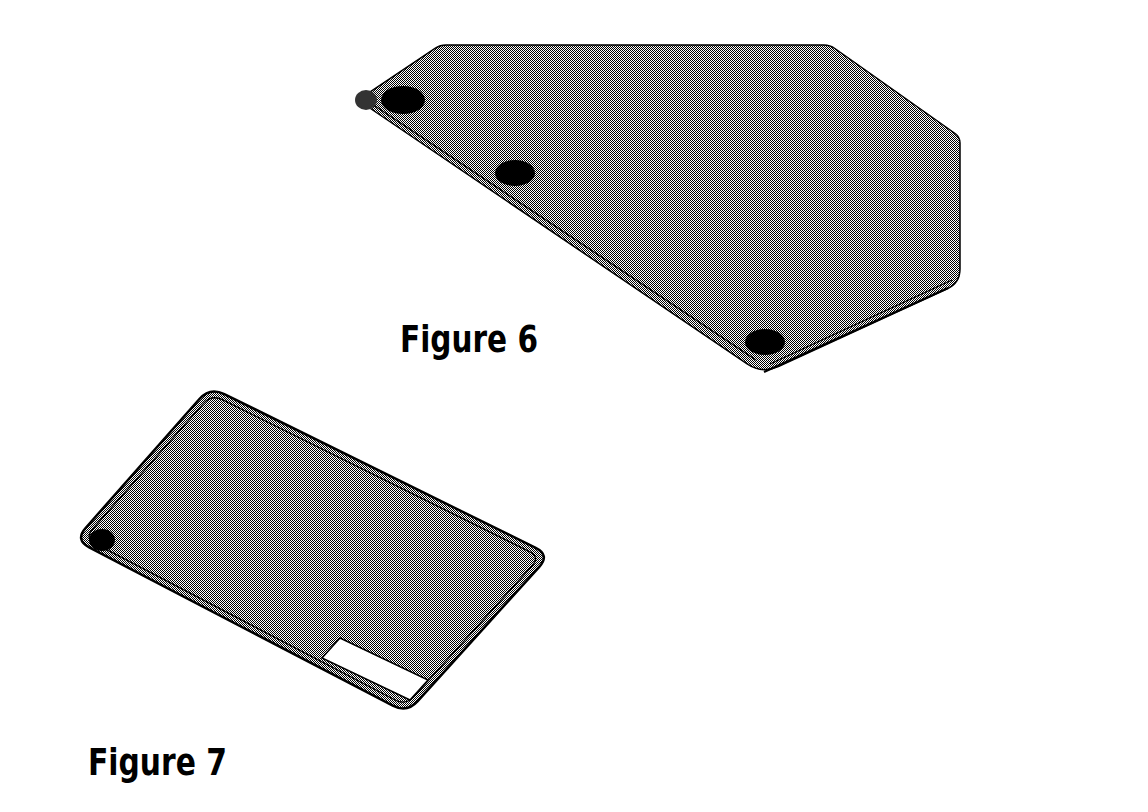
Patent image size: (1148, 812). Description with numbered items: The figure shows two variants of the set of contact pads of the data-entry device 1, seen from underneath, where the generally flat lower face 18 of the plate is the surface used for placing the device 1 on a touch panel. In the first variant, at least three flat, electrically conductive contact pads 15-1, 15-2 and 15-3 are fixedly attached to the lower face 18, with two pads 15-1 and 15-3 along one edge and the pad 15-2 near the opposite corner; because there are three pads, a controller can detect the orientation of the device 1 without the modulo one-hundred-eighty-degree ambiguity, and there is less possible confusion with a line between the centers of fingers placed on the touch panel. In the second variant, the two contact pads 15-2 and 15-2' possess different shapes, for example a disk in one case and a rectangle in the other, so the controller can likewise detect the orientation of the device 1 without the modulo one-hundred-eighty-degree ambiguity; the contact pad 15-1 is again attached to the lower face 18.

In FIG. 7, the data-entry device 1 is at (294, 560).
In FIG. 6, the lower face 18 is at (877, 88).
In FIG. 7, the lower face 18 is at (478, 540).
In FIG. 6, the contact pad 15-1 is at (392, 112).
In FIG. 7, the contact pad 15-1 is at (92, 556).
In FIG. 6, the contact pad 15-2 is at (834, 367).
In FIG. 6, the contact pad 15-3 is at (507, 186).
In FIG. 7, the contact pad 15-2' is at (375, 710).